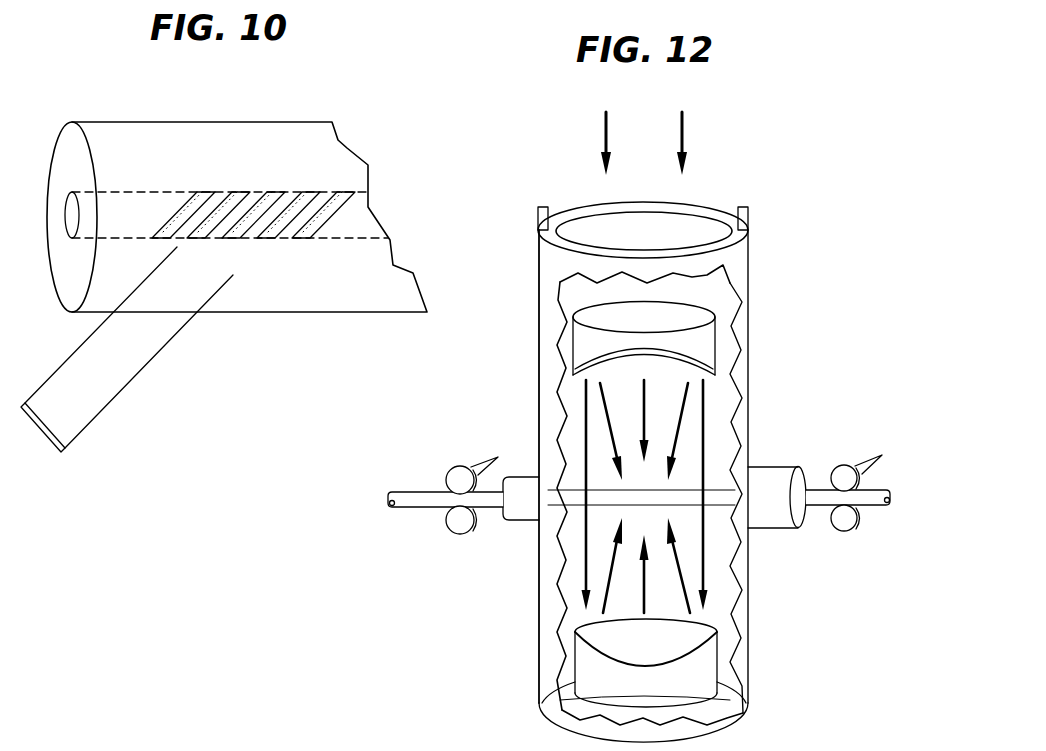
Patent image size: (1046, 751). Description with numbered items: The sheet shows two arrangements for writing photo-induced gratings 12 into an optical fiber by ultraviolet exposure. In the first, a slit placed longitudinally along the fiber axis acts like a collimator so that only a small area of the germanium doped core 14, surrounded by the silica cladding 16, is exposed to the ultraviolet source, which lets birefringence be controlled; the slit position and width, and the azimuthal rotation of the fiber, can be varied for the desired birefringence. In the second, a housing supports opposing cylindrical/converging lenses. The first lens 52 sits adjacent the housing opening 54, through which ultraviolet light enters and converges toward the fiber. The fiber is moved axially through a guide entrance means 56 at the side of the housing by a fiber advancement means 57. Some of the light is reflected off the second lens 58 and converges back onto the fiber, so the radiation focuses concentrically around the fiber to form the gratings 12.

In FIG. 10, the gratings 12 is at (222, 192).
In FIG. 10, the germanium doped core 14 is at (365, 217).
In FIG. 10, the silica cladding 16 is at (347, 298).
In FIG. 12, the first lens 52 is at (705, 312).
In FIG. 12, the housing opening 54 is at (697, 222).
In FIG. 12, the guide entrance means 56 is at (800, 480).
In FIG. 12, the fiber advancement means 57 is at (848, 465).
In FIG. 12, the second lens 58 is at (700, 642).